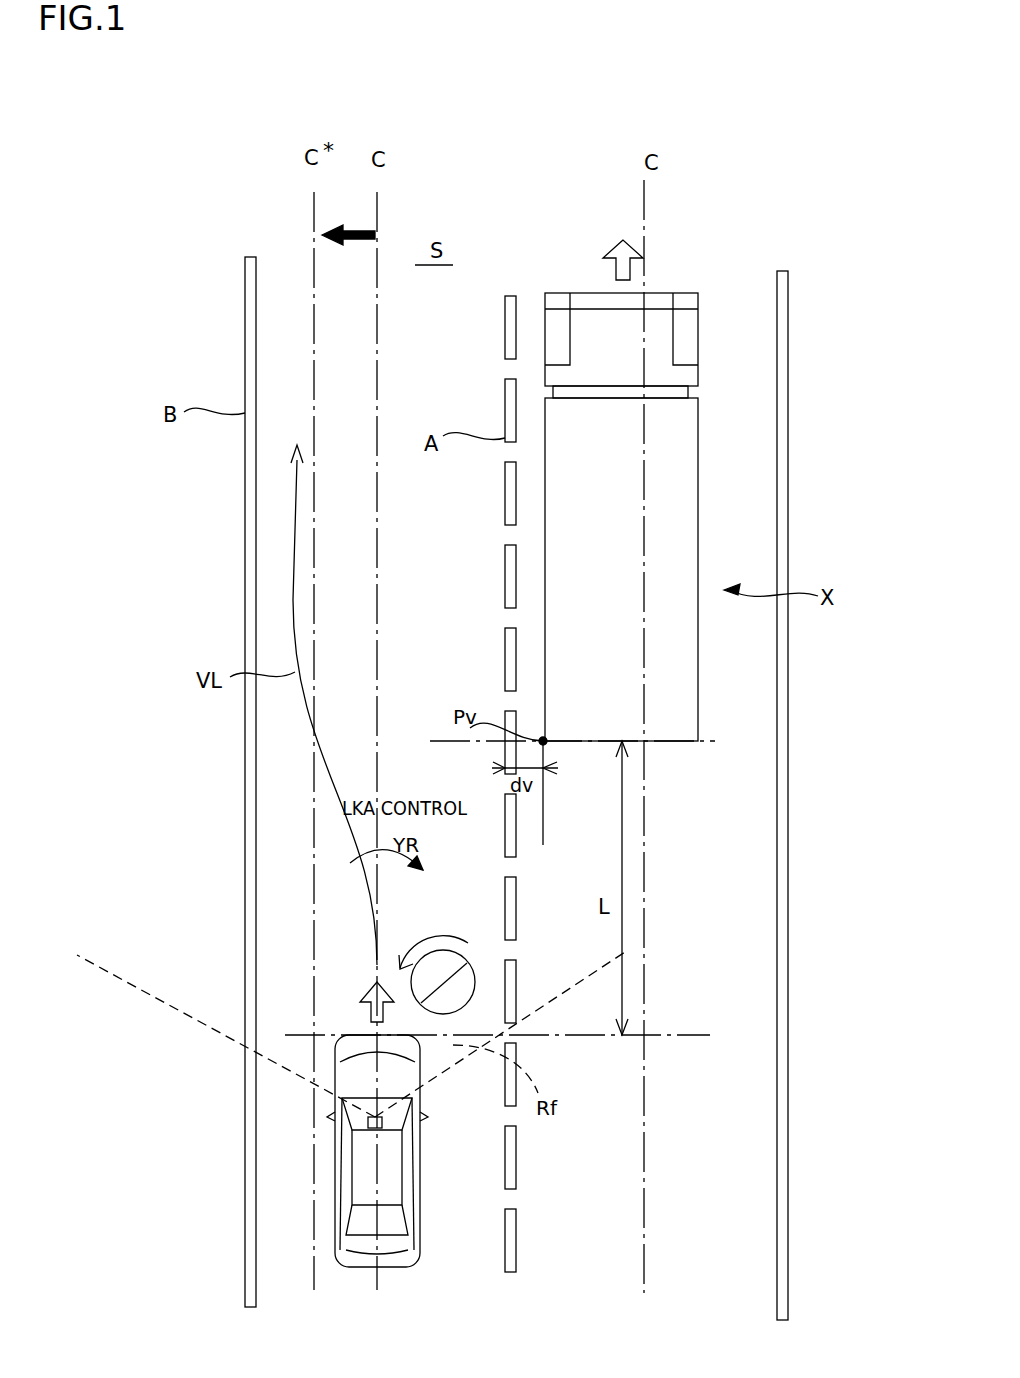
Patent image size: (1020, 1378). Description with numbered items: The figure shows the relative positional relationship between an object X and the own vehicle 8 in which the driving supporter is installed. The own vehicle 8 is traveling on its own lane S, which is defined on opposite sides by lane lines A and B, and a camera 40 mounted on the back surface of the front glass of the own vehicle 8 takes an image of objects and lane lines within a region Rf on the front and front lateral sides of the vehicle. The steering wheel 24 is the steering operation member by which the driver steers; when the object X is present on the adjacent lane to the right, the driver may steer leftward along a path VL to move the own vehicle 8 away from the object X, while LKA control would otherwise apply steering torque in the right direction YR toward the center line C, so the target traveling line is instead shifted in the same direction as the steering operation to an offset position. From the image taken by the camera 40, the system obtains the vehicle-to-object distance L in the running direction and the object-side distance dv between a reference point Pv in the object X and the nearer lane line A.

The own vehicle 8 is at (320, 1164).
The steering wheel 24 is at (445, 968).
The camera 40 is at (381, 1128).